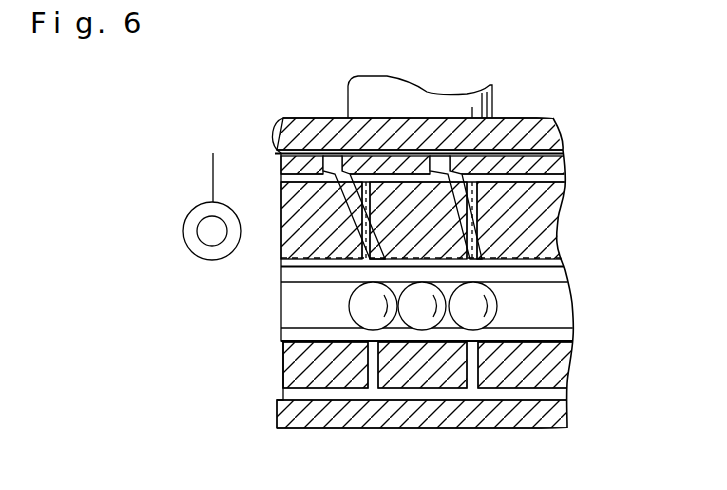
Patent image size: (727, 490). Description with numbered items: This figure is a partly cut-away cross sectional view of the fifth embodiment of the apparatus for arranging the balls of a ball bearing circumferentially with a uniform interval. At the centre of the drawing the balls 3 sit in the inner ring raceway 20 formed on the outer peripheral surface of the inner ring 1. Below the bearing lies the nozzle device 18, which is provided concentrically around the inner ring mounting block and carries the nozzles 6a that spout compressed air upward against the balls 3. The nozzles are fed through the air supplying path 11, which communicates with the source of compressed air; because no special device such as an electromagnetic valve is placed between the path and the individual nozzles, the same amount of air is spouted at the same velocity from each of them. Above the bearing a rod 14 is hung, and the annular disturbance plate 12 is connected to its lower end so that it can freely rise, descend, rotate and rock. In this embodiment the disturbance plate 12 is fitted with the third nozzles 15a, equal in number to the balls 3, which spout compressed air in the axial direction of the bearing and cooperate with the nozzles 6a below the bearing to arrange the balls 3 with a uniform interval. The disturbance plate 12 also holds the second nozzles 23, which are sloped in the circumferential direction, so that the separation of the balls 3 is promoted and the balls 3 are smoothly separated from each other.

The inner ring 1 is at (503, 283).
The balls 3 is at (365, 311).
The nozzles 6a is at (370, 370).
The air supplying path 11 is at (279, 153).
The disturbance plate 12 is at (530, 132).
The rod 14 is at (482, 111).
The third nozzles 15a is at (347, 262).
The nozzle device 18 is at (470, 388).
The inner ring raceway 20 is at (540, 315).
The second nozzles 23 is at (350, 205).